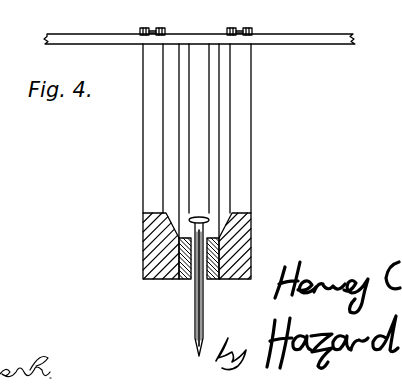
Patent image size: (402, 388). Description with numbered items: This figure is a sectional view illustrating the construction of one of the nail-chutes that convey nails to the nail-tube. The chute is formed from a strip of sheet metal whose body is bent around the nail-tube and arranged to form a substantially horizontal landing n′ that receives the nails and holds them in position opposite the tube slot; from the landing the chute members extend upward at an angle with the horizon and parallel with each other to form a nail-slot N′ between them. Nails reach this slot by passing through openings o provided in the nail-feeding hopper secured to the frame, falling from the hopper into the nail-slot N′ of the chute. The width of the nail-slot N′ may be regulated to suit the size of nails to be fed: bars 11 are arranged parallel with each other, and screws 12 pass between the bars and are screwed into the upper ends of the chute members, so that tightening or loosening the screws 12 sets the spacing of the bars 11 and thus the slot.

The bar 11 is at (333, 45).
The screw 12 is at (157, 29).
The nail-slot N′ is at (193, 59).
The landing n′ is at (210, 281).
The opening o is at (195, 312).